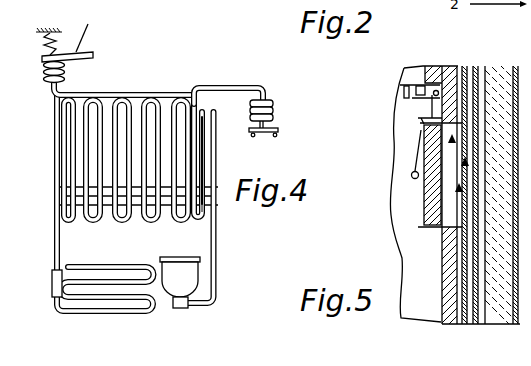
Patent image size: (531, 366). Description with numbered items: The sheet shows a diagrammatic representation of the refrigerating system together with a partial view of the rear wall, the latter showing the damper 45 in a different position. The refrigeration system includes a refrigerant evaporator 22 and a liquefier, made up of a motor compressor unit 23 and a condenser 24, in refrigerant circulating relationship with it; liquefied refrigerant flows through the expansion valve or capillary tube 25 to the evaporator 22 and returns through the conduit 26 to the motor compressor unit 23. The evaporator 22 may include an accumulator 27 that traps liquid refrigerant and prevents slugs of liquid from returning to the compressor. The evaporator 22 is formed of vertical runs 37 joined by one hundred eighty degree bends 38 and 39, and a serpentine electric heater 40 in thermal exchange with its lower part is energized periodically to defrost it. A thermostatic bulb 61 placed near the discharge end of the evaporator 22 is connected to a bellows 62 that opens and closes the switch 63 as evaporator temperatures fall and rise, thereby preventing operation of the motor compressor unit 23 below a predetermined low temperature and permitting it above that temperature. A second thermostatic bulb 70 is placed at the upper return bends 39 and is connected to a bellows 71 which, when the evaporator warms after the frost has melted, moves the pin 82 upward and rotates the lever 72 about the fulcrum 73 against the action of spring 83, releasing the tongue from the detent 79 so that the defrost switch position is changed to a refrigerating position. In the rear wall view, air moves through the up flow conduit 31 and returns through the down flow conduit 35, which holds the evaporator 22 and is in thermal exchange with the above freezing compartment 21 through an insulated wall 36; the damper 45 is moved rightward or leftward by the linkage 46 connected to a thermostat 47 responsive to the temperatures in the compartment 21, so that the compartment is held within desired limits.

In FIG. 5, the above freezing compartment 21 is at (412, 243).
In FIG. 4, the refrigerant evaporator 22 is at (56, 186).
In FIG. 5, the refrigerant evaporator 22 is at (464, 284).
In FIG. 4, the motor compressor unit 23 is at (182, 273).
In FIG. 4, the condenser 24 is at (105, 278).
In FIG. 4, the capillary tube 25 is at (53, 279).
In FIG. 4, the conduit 26 is at (217, 263).
In FIG. 4, the accumulator 27 is at (208, 165).
In FIG. 5, the up flow conduit 31 is at (479, 178).
In FIG. 5, the down flow conduit 35 is at (457, 310).
In FIG. 5, the insulated wall 36 is at (447, 270).
In FIG. 4, the vertical runs 37 is at (57, 151).
In FIG. 4, the 180° bends 38 is at (95, 224).
In FIG. 4, the upper return bends 39 is at (141, 97).
In FIG. 4, the serpentine electric heater 40 is at (150, 214).
In FIG. 5, the damper 45 is at (427, 199).
In FIG. 5, the linkage 46 is at (415, 170).
In FIG. 5, the thermostat 47 is at (413, 84).
In FIG. 4, the thermostatic bulb 61 is at (198, 109).
In FIG. 4, the bellows 62 is at (273, 103).
In FIG. 4, the switch 63 is at (271, 129).
In FIG. 4, the thermostatic bulb 70 is at (162, 95).
In FIG. 4, the bellows 71 is at (66, 75).
In FIG. 4, the lever 72 is at (88, 24).
In FIG. 4, the fulcrum 73 is at (62, 34).
In FIG. 4, the detent 79 is at (77, 56).
In FIG. 4, the pin 82 is at (44, 64).
In FIG. 4, the spring 83 is at (42, 48).